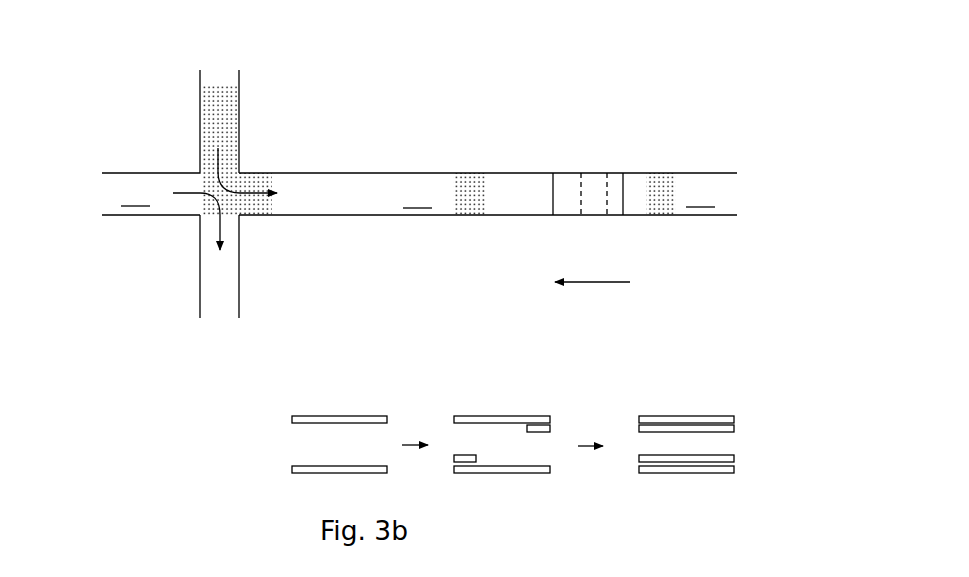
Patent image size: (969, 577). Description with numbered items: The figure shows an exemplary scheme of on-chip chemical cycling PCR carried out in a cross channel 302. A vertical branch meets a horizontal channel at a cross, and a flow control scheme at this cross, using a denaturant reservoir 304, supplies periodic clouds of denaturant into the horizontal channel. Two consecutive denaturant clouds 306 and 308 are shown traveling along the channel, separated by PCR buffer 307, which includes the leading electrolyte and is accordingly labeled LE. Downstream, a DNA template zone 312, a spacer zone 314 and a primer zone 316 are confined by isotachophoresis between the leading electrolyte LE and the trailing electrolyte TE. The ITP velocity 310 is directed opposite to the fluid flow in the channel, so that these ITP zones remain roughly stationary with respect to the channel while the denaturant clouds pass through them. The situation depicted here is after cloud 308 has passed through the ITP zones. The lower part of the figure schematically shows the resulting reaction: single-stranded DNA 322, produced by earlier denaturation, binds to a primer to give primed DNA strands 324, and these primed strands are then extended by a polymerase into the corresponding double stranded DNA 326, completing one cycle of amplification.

The cross channel 302 is at (175, 43).
The denaturant reservoir 304 is at (227, 118).
The denaturant cloud 306 is at (468, 202).
The PCR buffer 307 is at (390, 197).
The denaturant cloud 308 is at (663, 198).
The ITP velocity 310 is at (585, 283).
The DNA template zone 312 is at (566, 200).
The spacer zone 314 is at (597, 200).
The primer zone 316 is at (616, 200).
The single-stranded DNA 322 is at (346, 400).
The primed DNA strands 324 is at (490, 400).
The double stranded DNA 326 is at (678, 400).